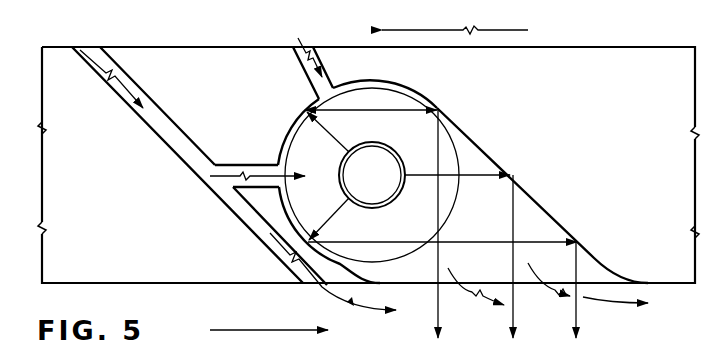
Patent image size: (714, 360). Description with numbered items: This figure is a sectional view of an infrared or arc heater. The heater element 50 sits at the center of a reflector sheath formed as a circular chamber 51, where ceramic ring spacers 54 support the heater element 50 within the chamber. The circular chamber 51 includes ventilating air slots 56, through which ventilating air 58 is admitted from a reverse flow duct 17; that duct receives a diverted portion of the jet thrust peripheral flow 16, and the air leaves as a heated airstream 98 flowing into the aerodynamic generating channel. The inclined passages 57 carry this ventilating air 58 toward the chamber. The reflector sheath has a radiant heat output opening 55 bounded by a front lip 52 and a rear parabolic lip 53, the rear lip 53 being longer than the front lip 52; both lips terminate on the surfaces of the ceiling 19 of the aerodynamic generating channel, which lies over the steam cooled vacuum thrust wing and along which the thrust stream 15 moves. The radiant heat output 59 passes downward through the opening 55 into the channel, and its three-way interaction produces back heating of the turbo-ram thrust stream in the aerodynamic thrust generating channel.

The thrust stream 15 is at (269, 318).
The jet thrust peripheral flow 16 is at (473, 30).
The reverse flow duct 17 is at (168, 29).
The ceiling 19 is at (166, 287).
The heater element 50 is at (372, 175).
The circular chamber 51 is at (413, 88).
The front lip 52 is at (371, 280).
The rear parabolic lip 53 is at (530, 191).
The ceramic ring spacers 54 is at (364, 99).
The radiant heat output opening 55 is at (509, 287).
The ventilating air slots 56 is at (262, 164).
The inlet duct 57 is at (181, 133).
The ventilating air 58 is at (233, 164).
The radiant heat output 59 is at (524, 227).
The heated airstream 98 is at (634, 310).